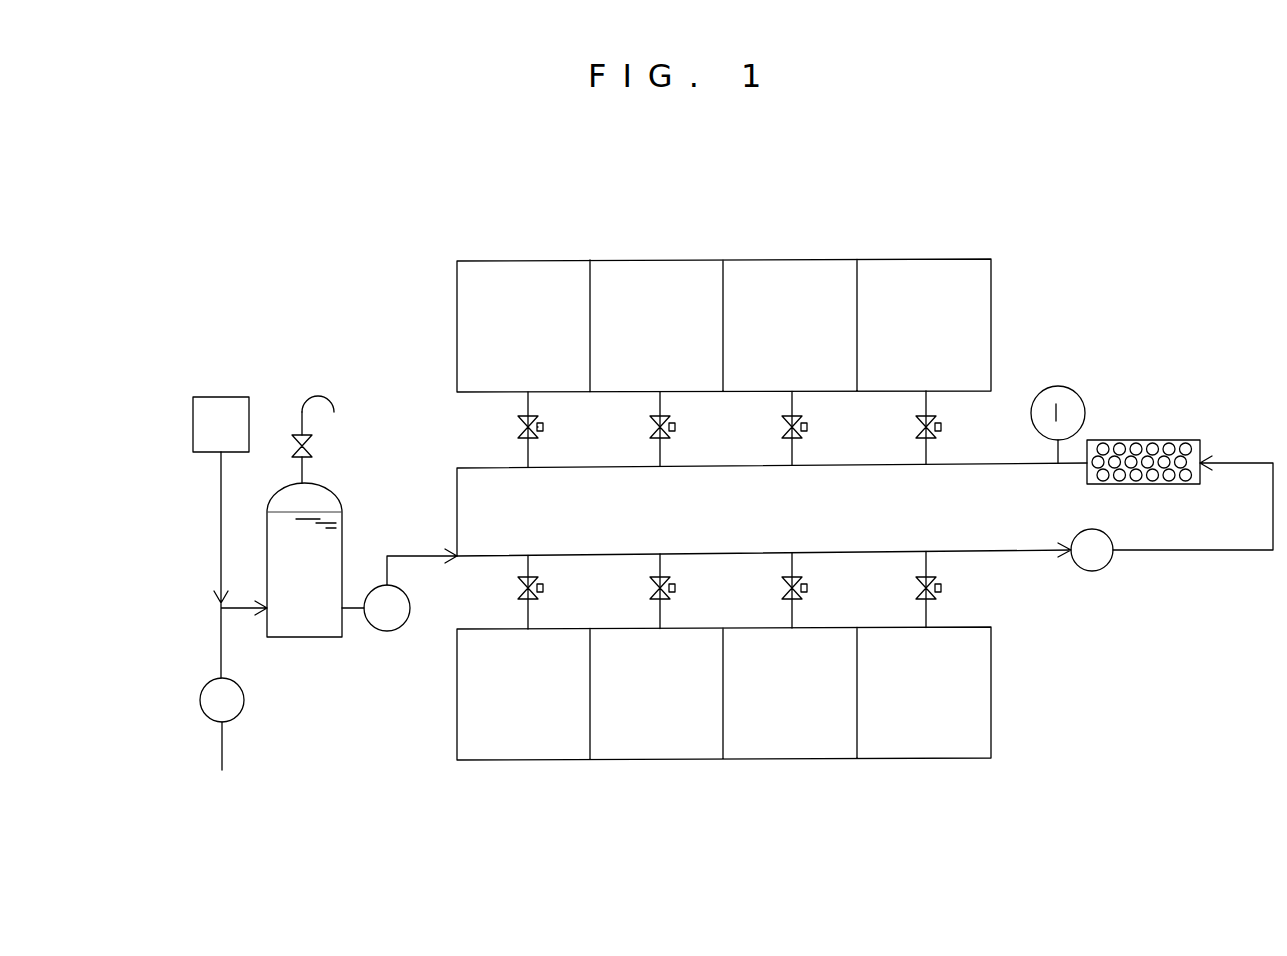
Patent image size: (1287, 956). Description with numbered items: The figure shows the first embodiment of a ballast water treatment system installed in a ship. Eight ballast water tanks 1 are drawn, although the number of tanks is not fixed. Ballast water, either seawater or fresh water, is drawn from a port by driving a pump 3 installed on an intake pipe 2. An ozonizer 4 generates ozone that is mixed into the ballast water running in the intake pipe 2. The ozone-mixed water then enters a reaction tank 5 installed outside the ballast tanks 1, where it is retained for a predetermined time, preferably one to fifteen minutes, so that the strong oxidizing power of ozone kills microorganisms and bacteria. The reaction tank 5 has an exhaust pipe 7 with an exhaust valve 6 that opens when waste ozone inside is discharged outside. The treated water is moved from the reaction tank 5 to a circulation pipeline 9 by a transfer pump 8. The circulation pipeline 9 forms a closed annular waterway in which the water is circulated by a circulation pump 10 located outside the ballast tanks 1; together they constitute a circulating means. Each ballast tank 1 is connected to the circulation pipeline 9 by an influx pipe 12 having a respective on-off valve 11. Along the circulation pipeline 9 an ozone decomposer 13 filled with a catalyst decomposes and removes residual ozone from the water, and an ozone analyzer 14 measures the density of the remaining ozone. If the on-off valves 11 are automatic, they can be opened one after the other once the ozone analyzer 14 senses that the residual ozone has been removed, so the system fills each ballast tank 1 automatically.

The ballast water tank 1 is at (536, 258).
The intake pipe 2 is at (218, 640).
The pump 3 is at (198, 700).
The ozonizer 4 is at (192, 425).
The reaction tank 5 is at (343, 500).
The exhaust valve 6 is at (314, 447).
The exhaust pipe 7 is at (318, 396).
The transfer pump 8 is at (387, 632).
The circulation pipeline 9 is at (458, 507).
The circulation pump 10 is at (1092, 572).
The on-off valve 11 is at (545, 428).
The influx pipe 12 is at (531, 405).
The ozone decomposer 13 is at (1165, 438).
The ozone analyzer 14 is at (1058, 386).